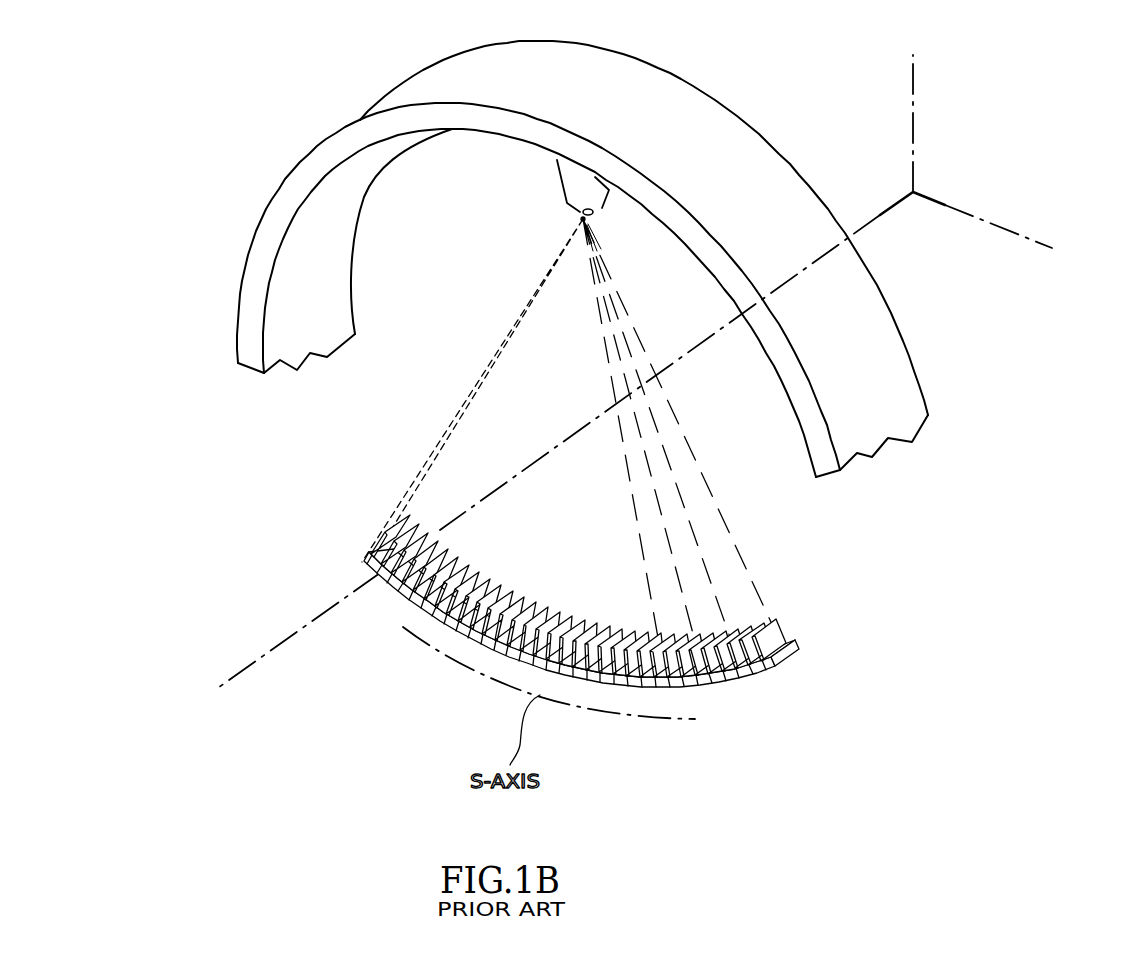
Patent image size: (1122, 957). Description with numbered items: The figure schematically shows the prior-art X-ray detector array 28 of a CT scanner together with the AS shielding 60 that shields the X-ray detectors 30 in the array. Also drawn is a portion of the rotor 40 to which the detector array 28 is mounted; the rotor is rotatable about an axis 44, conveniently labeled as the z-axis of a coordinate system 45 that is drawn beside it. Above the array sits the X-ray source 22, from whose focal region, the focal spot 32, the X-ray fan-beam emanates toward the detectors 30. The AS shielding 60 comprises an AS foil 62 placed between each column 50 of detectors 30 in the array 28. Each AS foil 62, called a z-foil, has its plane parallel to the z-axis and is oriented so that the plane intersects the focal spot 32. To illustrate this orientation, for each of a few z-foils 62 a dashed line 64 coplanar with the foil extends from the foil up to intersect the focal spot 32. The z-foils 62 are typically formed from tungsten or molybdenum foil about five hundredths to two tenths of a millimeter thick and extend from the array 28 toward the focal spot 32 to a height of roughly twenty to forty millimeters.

The X-ray source 22 is at (580, 182).
The array of X-ray detectors 28 is at (636, 629).
The X-ray detectors 30 is at (763, 672).
The focal spot 32 is at (583, 219).
The rotor 40 is at (258, 292).
The axis 44 is at (287, 642).
The coordinate system 45 is at (995, 128).
The column of detectors 50 is at (505, 566).
The AS shielding 60 is at (636, 629).
The AS foil 62 is at (602, 620).
The dashed line 64 is at (608, 330).